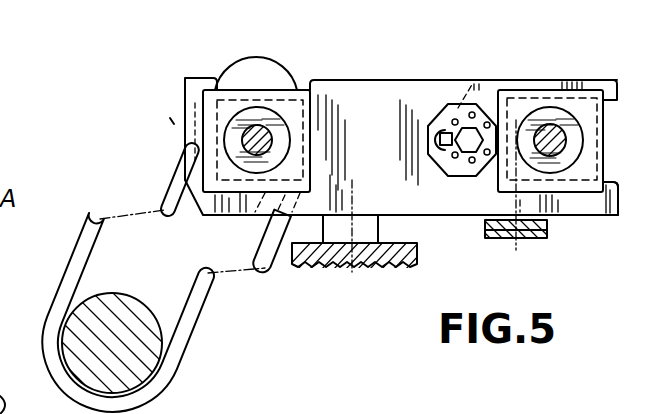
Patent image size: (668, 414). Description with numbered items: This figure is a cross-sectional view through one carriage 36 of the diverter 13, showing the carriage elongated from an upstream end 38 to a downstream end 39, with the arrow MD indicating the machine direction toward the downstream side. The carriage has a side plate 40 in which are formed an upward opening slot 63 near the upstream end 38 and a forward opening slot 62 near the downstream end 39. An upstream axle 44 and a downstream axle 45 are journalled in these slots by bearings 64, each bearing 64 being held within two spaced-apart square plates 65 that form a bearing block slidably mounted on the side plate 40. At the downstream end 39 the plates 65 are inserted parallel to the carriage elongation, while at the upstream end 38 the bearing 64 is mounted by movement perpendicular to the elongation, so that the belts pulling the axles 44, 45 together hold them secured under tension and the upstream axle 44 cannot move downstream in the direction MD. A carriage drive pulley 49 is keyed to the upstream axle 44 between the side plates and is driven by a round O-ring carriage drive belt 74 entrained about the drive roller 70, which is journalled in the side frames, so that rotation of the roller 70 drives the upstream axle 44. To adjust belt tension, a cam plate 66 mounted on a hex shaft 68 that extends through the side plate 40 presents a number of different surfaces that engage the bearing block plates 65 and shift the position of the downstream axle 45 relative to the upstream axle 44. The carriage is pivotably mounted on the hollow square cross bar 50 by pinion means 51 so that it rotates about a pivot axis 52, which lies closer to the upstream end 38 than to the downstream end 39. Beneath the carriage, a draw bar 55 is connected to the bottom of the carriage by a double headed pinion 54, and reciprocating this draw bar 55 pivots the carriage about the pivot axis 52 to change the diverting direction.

The diverter 13 is at (398, 315).
The carriage 36 is at (443, 250).
The upstream end 38 is at (163, 123).
The downstream end 39 is at (650, 56).
The side plate 40 is at (366, 98).
The upstream axle 44 is at (246, 139).
The downstream axle 45 is at (557, 137).
The carriage drive pulley 49 is at (278, 98).
The cross bar 50 is at (328, 262).
The pinion means 51 is at (380, 228).
The pivot axis 52 is at (350, 208).
The double headed pinion 54 is at (530, 240).
The draw bar 55 is at (503, 238).
The forward opening slot 62 is at (618, 94).
The upward opening slot 63 is at (217, 88).
The bearing 64 is at (233, 122).
The square plates 65 is at (212, 217).
The cam plate 66 is at (474, 104).
The hex shaft 68 is at (470, 142).
The drive roller 70 is at (140, 357).
The carriage drive belt 74 is at (253, 280).
The machine direction MD is at (452, 52).